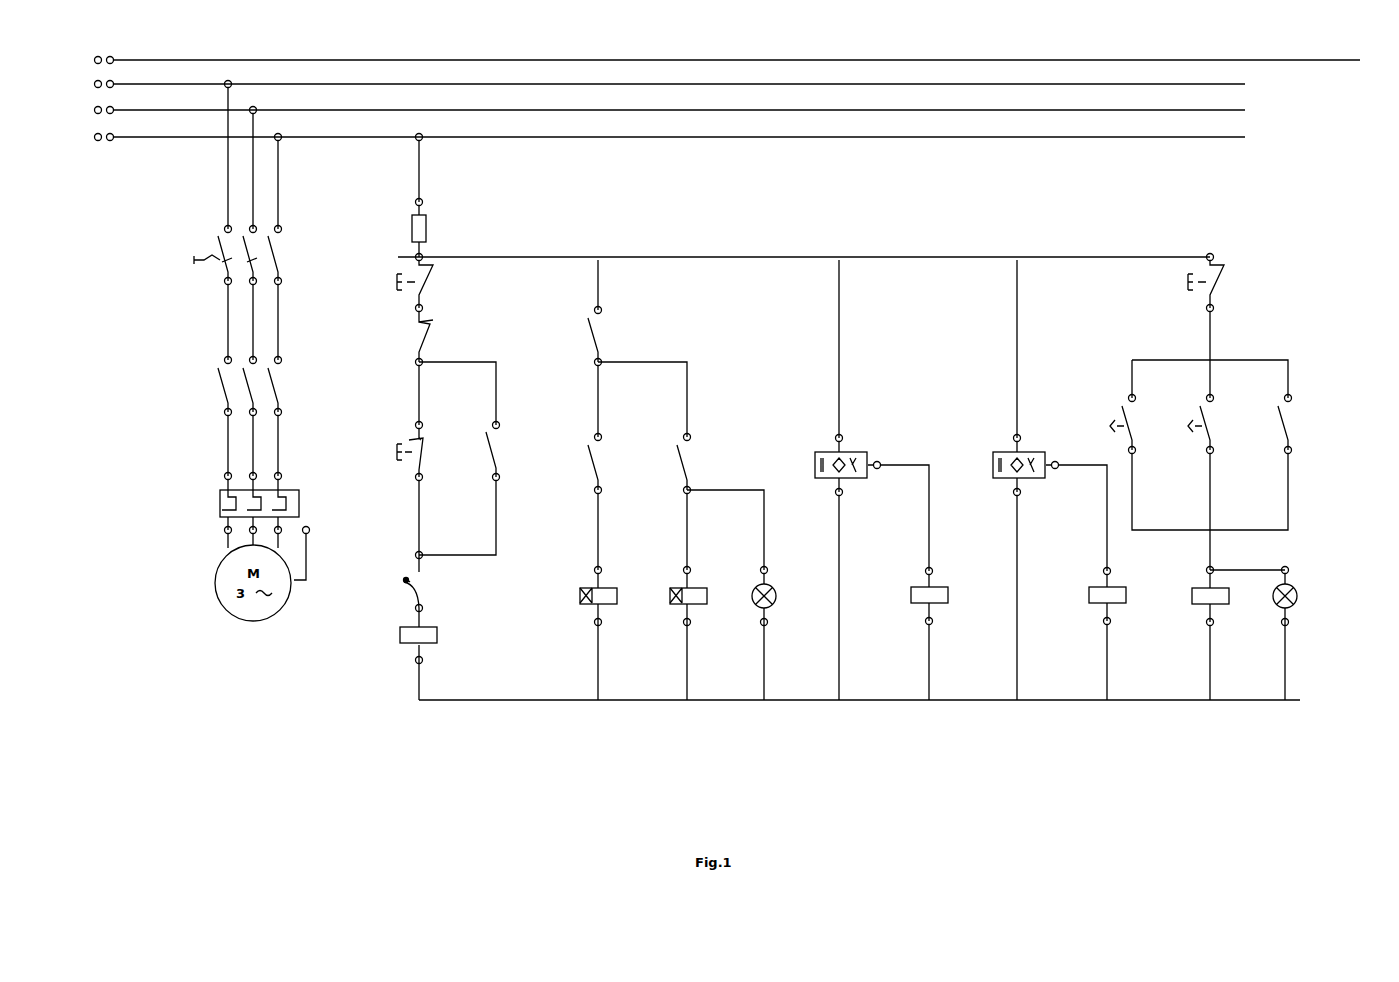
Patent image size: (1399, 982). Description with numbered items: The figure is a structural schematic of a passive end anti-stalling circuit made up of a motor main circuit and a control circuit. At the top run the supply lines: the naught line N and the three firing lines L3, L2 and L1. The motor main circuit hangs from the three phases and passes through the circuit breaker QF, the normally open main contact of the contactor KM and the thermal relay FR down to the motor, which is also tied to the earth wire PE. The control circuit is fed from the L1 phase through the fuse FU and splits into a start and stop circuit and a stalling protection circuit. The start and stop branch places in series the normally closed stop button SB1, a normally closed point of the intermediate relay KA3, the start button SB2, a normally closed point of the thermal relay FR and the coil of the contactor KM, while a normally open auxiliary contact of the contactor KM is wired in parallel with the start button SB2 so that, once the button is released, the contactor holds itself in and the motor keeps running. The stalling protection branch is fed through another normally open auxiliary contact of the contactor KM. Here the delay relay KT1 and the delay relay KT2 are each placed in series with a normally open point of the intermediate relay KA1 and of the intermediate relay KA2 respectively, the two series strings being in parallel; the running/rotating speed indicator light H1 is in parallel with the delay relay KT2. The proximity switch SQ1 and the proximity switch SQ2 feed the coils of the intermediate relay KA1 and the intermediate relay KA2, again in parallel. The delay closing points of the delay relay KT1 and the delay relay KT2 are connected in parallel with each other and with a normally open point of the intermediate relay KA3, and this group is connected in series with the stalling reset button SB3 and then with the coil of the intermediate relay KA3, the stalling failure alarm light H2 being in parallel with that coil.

The naught line N is at (714, 61).
The firing line L3 is at (656, 85).
The firing line L2 is at (656, 112).
The firing line L1 is at (656, 138).
The circuit breaker QF is at (218, 255).
The contactor KM is at (387, 476).
The thermal relay FR is at (300, 541).
The earth wire PE is at (312, 554).
The fuse FU is at (403, 228).
The stop button SB1 is at (391, 286).
The start button SB2 is at (386, 454).
The stalling reset button SB3 is at (1183, 283).
The intermediate relay KA1 is at (745, 529).
The intermediate relay KA2 is at (880, 529).
The intermediate relay KA3 is at (830, 469).
The delay relay KT1 is at (835, 510).
The delay relay KT2 is at (920, 510).
The running/rotating speed indicator light H1 is at (747, 596).
The stalling failure alarm light H2 is at (1267, 596).
The proximity switch SQ1 is at (824, 465).
The proximity switch SQ2 is at (1002, 465).